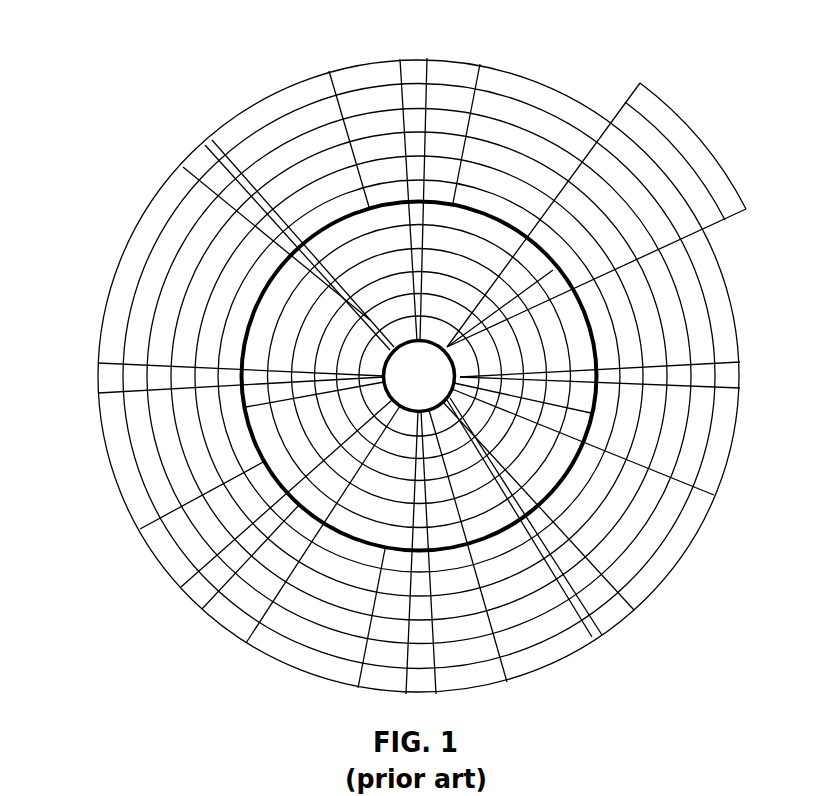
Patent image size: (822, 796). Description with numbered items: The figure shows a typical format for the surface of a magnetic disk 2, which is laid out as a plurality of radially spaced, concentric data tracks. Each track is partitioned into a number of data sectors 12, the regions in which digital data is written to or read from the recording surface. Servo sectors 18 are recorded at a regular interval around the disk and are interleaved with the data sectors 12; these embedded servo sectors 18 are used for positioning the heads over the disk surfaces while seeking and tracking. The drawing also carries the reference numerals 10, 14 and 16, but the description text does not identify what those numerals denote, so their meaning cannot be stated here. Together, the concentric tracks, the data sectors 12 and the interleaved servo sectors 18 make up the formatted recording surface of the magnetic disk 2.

The magnetic disk 2 is at (167, 127).
The sector 10 is at (698, 445).
The data sector 12 is at (700, 137).
The inner zone 14 is at (285, 424).
The outer zone 16 is at (180, 245).
The servo sector 18 is at (417, 98).